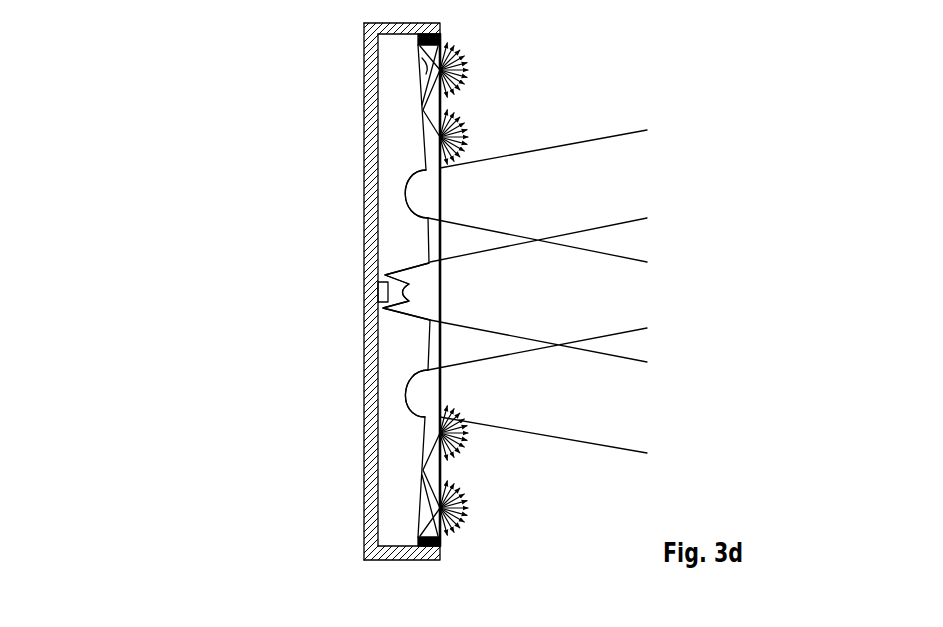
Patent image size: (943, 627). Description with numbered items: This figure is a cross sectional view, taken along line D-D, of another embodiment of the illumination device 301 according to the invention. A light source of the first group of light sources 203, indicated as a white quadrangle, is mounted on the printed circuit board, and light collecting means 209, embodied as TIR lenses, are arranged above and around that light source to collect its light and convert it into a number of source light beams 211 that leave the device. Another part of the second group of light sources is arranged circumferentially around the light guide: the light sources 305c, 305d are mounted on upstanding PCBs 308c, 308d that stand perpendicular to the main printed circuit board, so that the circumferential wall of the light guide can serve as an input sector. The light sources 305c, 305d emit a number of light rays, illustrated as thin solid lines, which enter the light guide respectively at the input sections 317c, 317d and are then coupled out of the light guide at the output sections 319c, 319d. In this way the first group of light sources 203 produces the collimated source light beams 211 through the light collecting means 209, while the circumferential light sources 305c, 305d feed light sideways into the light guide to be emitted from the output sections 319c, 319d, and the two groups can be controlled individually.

The illumination device 301 is at (262, 66).
The upstanding PCB 308c is at (435, 26).
The upstanding PCB 308d is at (405, 552).
The light source 305c is at (443, 35).
The light source 305d is at (441, 543).
The input section 317c is at (428, 64).
The input section 317d is at (430, 535).
The output section 319c is at (488, 33).
The output section 319d is at (470, 422).
The first group of light sources 203 is at (378, 288).
The light collecting means 209 is at (428, 320).
The source light beams 211 is at (346, 291).